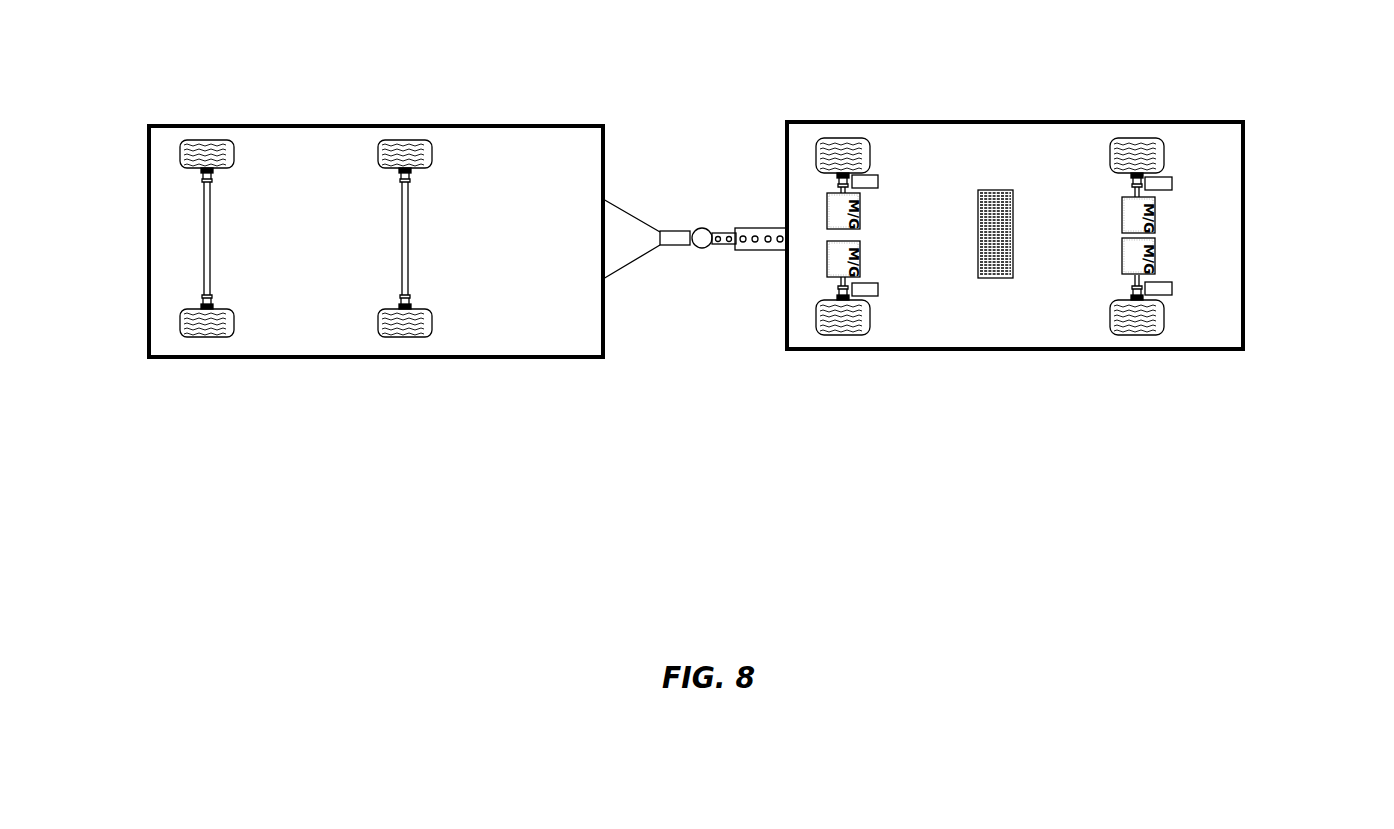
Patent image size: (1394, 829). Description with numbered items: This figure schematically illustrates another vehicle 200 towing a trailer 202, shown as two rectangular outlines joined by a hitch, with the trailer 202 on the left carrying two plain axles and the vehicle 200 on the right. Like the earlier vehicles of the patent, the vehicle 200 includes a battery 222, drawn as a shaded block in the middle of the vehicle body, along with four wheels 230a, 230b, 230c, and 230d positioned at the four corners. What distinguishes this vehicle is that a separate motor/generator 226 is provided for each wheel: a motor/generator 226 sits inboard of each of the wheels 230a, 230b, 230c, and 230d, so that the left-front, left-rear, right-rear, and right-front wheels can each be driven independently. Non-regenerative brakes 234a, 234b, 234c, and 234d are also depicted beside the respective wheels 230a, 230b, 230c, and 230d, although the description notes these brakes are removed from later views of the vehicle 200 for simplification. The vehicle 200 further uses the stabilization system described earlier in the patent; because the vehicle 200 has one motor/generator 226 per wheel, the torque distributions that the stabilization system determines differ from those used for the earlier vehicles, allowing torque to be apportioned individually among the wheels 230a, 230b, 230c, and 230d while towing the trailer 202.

The vehicle 200 is at (1242, 153).
The trailer 202 is at (190, 127).
The battery 222 is at (998, 280).
The motor/generator 226 is at (862, 208).
The wheel 230a is at (833, 140).
The wheel 230b is at (830, 333).
The wheel 230c is at (1148, 333).
The wheel 230d is at (1122, 140).
The non-regenerative brake 234a is at (872, 175).
The non-regenerative brake 234b is at (875, 297).
The non-regenerative brake 234c is at (1172, 290).
The non-regenerative brake 234d is at (1172, 184).